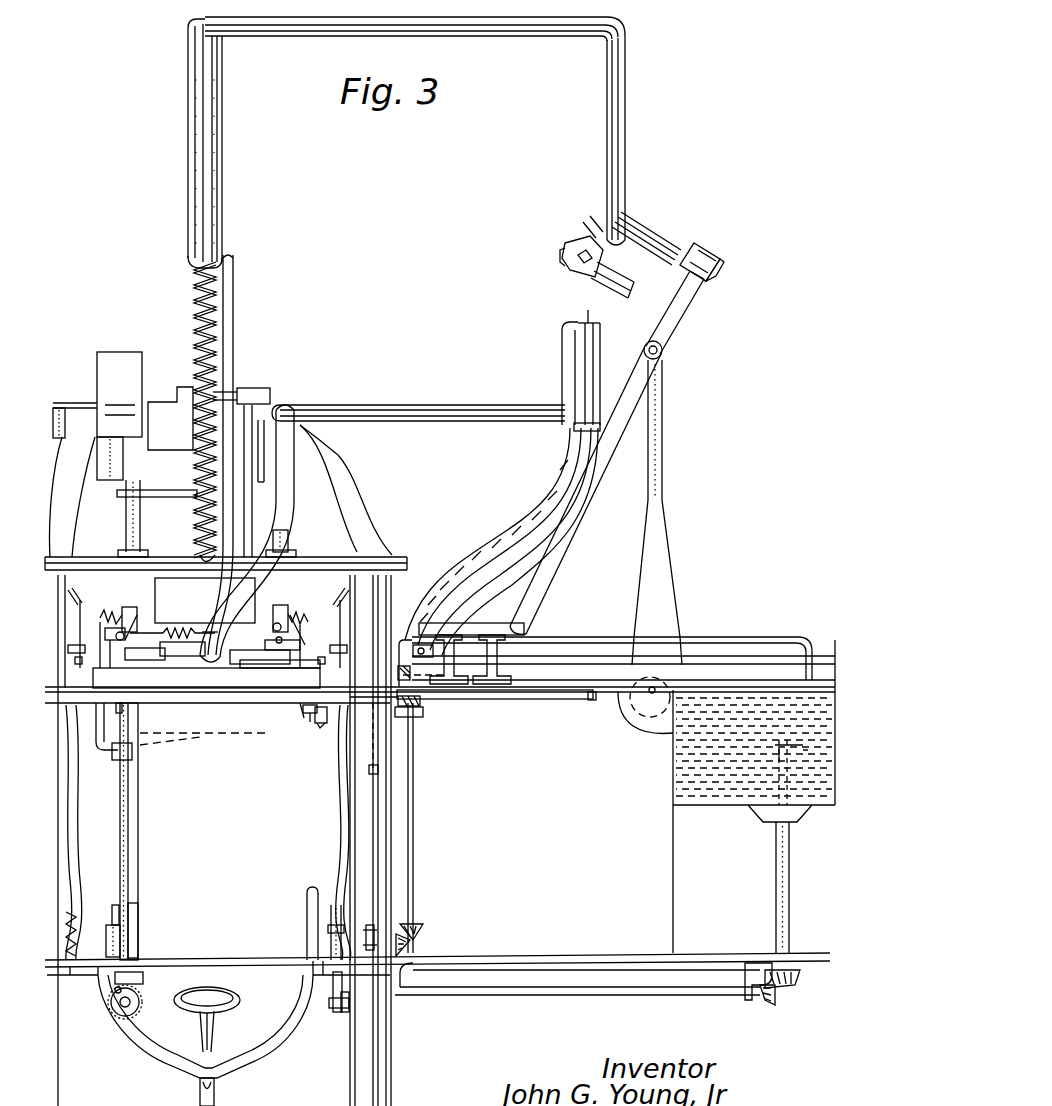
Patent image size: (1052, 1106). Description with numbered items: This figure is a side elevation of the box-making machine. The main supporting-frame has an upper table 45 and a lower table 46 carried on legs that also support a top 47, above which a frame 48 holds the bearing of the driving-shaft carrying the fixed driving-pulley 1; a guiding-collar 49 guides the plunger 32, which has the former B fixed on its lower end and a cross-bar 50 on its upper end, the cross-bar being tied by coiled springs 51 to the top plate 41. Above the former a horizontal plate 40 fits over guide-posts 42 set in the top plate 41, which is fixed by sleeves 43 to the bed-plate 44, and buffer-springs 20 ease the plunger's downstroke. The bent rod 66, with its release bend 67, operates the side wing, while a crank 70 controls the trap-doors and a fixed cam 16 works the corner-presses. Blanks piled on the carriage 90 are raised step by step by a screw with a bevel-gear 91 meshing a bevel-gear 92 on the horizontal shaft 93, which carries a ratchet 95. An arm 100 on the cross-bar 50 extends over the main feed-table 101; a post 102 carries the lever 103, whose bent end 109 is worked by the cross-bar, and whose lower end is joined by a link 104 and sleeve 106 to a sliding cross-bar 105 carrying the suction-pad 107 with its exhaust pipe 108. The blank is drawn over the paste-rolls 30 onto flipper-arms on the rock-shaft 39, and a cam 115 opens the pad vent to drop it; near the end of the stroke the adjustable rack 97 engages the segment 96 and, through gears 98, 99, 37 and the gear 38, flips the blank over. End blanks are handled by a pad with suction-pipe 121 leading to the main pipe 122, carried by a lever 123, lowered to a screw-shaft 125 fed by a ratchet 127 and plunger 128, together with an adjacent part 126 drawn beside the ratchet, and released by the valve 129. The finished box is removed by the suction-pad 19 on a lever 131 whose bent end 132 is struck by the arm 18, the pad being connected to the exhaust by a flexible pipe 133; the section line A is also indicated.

The driving-pulley 1 is at (97, 416).
The fixed cam 16 is at (66, 812).
The arm on the plate 18 is at (318, 725).
The suction-pad 19 is at (224, 1016).
The buffer-springs 20 is at (74, 915).
The paste-rolls 30 is at (640, 705).
The plunger 32 is at (220, 180).
The gear 37 is at (420, 713).
The gear on the flipper-shaft 38 is at (420, 703).
The rock-shaft 39 is at (537, 698).
The horizontal plate or frame 40 is at (165, 497).
The top plate 41 is at (177, 572).
The guide-posts 42 is at (140, 538).
The sleeves 43 is at (65, 620).
The bed-plate 44 is at (292, 712).
The upper table 45 is at (473, 696).
The lower table 46 is at (455, 955).
The top 47 is at (402, 556).
The frame 48 is at (338, 470).
The guiding-collar 49 is at (209, 418).
The cross-bar 50 is at (562, 27).
The coiled springs 51 is at (190, 272).
The rod 66 is at (104, 748).
The low parts formed by bends 67 is at (140, 880).
The crank 70 is at (86, 703).
The vertically-moving carriage 90 is at (776, 912).
The bevel-gear 91 is at (795, 978).
The bevel-gear 92 is at (775, 998).
The horizontal shaft 93 is at (573, 990).
The ratchet 95 is at (330, 900).
The segment 96 is at (369, 937).
The adjustable rack 97 is at (359, 738).
The gear 98 is at (412, 942).
The gear 99 is at (418, 928).
The arm 100 is at (614, 162).
The main feed-table 101 is at (724, 690).
The post 102 is at (666, 508).
The lever 103 is at (672, 329).
The link 104 is at (492, 628).
The sliding cross-bar 105 is at (425, 648).
The sleeve 106 is at (745, 640).
The suction-pad 107 is at (400, 670).
The pipe 108 is at (478, 535).
The bent upper end of the lever 109 is at (660, 236).
The cam 115 is at (524, 629).
The suction-pipe 121 is at (262, 520).
The main pipe 122 is at (562, 354).
The lever 123 is at (236, 350).
The screw-shaft 125 is at (130, 748).
The gear 126 is at (130, 897).
The ratchet 127 is at (136, 1005).
The plunger 128 is at (136, 920).
The valve 129 is at (218, 636).
The lever 131 is at (274, 1045).
The bent end 132 is at (307, 918).
The flexible pipe 133 is at (215, 1085).
The section A is at (50, 848).
The former B is at (237, 611).